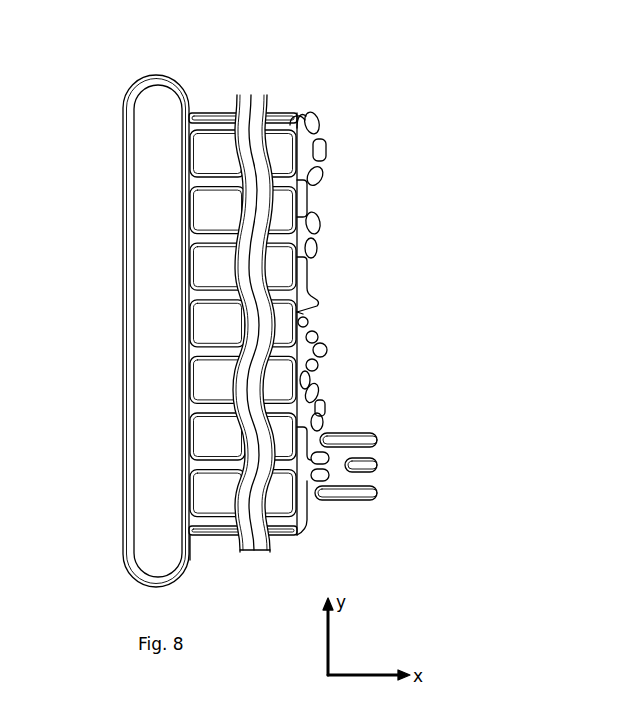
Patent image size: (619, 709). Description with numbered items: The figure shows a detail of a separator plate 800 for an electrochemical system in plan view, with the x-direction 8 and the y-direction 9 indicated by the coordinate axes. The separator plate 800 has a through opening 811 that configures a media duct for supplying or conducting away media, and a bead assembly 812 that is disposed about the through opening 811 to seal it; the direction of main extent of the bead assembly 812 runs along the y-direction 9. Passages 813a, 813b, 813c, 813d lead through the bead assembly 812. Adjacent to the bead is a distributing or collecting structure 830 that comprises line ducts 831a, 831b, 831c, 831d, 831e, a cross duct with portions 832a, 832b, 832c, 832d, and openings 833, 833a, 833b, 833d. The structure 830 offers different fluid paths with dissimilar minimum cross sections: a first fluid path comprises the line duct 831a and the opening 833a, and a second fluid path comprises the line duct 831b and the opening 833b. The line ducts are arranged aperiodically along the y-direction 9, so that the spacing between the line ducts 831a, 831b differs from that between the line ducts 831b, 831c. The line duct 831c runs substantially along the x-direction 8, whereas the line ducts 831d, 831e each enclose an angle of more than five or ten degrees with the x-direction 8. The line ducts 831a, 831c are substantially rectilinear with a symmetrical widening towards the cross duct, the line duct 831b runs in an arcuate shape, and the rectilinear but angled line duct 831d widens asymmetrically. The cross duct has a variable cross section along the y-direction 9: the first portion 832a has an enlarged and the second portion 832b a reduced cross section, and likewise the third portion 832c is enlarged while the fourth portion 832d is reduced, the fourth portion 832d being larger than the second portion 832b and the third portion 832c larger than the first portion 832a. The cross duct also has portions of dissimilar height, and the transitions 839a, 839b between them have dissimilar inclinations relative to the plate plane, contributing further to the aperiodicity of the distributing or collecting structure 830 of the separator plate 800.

The separator plate 800 is at (330, 50).
The through opening 811 is at (176, 347).
The bead assembly 812 is at (250, 520).
The passage 813a is at (268, 128).
The passage 813b is at (265, 510).
The passage 813c is at (266, 180).
The passage 813d is at (265, 455).
The distributing or collecting structure 830 is at (398, 545).
The line duct 831a is at (284, 352).
The line duct 831b is at (293, 290).
The line duct 831c is at (316, 216).
The line duct 831d is at (310, 179).
The line duct 831e is at (291, 120).
The first portion of cross duct 832a is at (342, 130).
The second portion of cross duct 832b is at (320, 196).
The third portion of cross duct 832c is at (339, 233).
The fourth portion of cross duct 832d is at (322, 271).
The openings 833 is at (326, 408).
The opening 833a is at (316, 367).
The opening 833b is at (306, 321).
The opening 833d is at (318, 178).
The transition 839a is at (300, 203).
The transition 839b is at (293, 500).
The x-direction 8 is at (358, 673).
The y-direction 9 is at (328, 642).